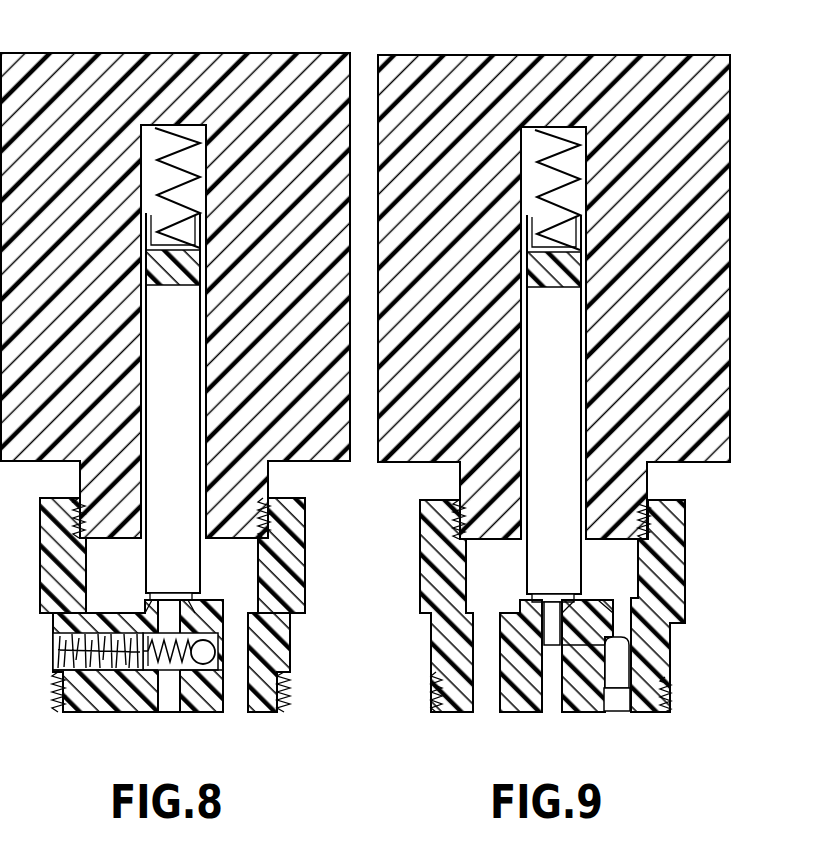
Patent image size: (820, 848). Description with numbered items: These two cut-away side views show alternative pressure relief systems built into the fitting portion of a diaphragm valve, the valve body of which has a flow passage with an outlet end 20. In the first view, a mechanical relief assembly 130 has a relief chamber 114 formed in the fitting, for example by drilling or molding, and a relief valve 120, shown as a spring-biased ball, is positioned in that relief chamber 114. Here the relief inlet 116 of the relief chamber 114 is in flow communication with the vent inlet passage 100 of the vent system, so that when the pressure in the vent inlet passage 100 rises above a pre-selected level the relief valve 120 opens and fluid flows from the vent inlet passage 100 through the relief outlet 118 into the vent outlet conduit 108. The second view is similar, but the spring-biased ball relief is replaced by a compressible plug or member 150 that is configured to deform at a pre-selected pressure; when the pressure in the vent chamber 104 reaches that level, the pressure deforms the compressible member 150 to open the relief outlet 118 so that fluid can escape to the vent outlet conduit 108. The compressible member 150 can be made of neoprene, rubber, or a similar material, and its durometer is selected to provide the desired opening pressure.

In FIG. 8, the outlet end 20 is at (226, 60).
In FIG. 9, the outlet end 20 is at (730, 150).
In FIG. 8, the vent inlet passage 100 is at (233, 702).
In FIG. 9, the vent inlet passage 100 is at (487, 630).
In FIG. 8, the vent chamber 104 is at (242, 570).
In FIG. 9, the vent chamber 104 is at (482, 553).
In FIG. 8, the vent outlet conduit 108 is at (170, 697).
In FIG. 9, the vent outlet conduit 108 is at (550, 680).
In FIG. 8, the relief chamber 114 is at (235, 615).
In FIG. 8, the relief inlet 116 is at (207, 652).
In FIG. 9, the relief inlet 116 is at (613, 613).
In FIG. 9, the relief outlet 118 is at (580, 615).
In FIG. 8, the relief valve 120 is at (160, 712).
In FIG. 8, the mechanical relief assembly 130 is at (136, 720).
In FIG. 9, the compressible member 150 is at (620, 662).